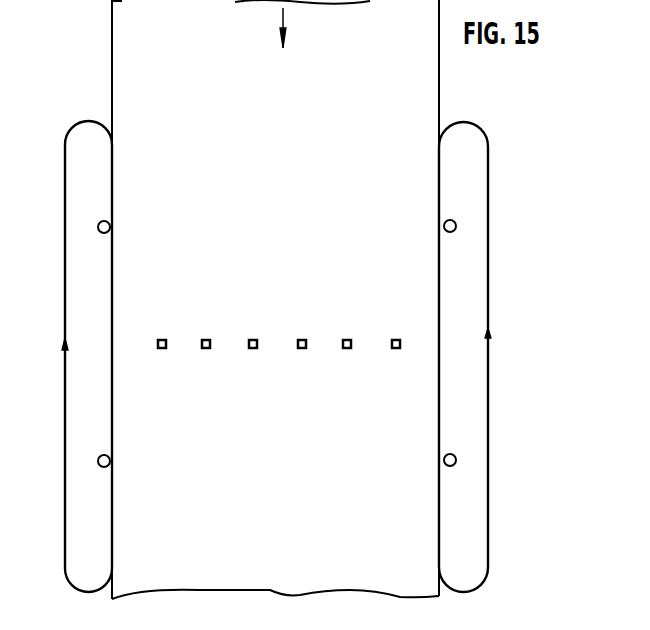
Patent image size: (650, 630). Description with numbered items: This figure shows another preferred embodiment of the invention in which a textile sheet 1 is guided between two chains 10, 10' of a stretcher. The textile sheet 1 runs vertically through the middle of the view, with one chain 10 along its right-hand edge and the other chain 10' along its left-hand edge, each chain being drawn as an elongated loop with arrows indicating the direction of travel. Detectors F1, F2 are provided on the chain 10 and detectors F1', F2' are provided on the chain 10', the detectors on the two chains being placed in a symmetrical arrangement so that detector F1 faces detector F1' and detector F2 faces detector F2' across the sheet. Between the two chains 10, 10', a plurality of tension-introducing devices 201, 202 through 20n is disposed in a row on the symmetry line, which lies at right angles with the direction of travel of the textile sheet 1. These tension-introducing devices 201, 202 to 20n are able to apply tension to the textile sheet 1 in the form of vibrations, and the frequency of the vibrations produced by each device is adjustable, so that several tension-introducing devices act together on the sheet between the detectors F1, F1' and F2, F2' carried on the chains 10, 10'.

The textile sheet 1 is at (128, 33).
The chain 10 is at (507, 357).
The chain 10' is at (62, 356).
The detector F1 is at (486, 230).
The detector F1' is at (66, 236).
The detector F2 is at (481, 457).
The detector F2' is at (70, 468).
The tension-introducing device 201 is at (162, 350).
The tension-introducing device 202 is at (206, 350).
The tension-introducing device 20n is at (396, 350).